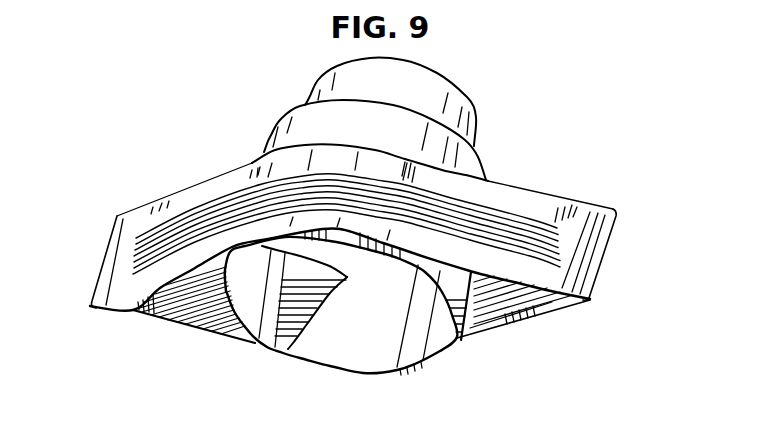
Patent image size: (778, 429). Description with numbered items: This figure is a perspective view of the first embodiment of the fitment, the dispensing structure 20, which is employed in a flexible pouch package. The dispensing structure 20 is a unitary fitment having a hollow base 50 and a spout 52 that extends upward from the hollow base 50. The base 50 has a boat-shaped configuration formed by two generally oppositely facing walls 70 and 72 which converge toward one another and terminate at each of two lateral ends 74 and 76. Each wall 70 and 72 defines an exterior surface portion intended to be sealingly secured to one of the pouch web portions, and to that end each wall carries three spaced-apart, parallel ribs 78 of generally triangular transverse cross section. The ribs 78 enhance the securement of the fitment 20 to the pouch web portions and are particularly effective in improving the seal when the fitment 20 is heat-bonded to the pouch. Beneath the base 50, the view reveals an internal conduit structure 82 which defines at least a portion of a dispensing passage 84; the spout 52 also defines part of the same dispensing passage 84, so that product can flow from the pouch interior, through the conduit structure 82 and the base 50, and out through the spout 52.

The dispensing structure 20 is at (524, 102).
The hollow base 50 is at (629, 216).
The spout 52 is at (248, 67).
The wall 70 is at (158, 284).
The wall 72 is at (190, 318).
The lateral end 74 is at (90, 288).
The lateral end 76 is at (602, 298).
The ribs 78 is at (119, 260).
The internal conduit structure 82 is at (475, 296).
The dispensing passage 84 is at (388, 332).